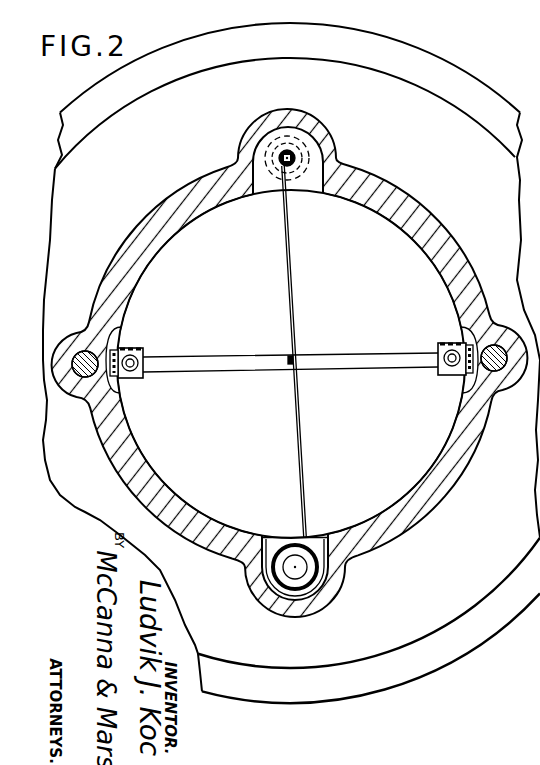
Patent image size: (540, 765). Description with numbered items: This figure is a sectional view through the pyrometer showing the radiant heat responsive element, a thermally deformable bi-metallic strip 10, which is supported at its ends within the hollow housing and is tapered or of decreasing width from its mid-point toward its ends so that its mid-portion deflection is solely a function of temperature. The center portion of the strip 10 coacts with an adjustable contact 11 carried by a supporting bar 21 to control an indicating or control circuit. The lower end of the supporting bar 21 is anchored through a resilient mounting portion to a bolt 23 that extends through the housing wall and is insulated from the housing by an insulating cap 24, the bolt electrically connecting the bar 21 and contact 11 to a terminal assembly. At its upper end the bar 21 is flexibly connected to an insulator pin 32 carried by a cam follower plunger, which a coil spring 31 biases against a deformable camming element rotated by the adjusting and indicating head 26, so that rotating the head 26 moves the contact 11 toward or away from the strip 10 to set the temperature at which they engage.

The thermally deformable bi-metallic strip 10 is at (221, 370).
The adjustable contact 11 is at (290, 357).
The supporting bar 21 is at (291, 273).
The bolt 23 is at (291, 563).
The insulating cap 24 is at (315, 538).
The rotatable adjusting and indicating head 26 is at (452, 656).
The coil spring 31 is at (322, 142).
The insulator pin 32 is at (254, 145).